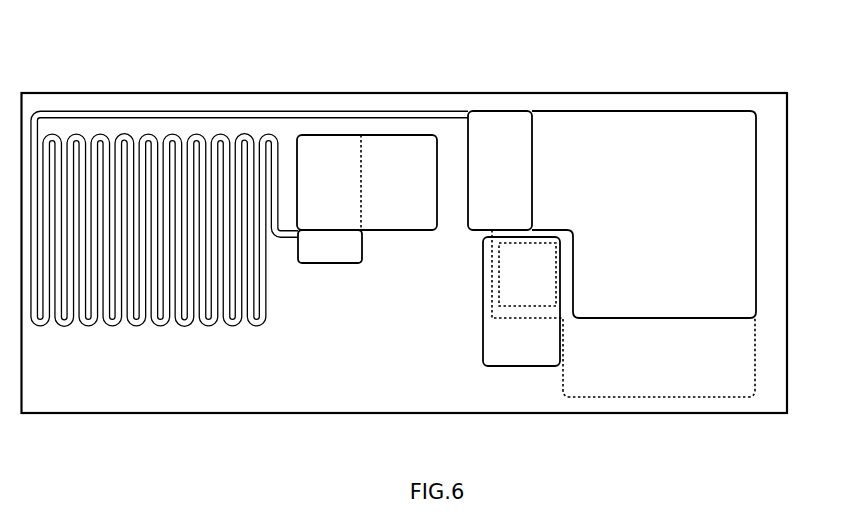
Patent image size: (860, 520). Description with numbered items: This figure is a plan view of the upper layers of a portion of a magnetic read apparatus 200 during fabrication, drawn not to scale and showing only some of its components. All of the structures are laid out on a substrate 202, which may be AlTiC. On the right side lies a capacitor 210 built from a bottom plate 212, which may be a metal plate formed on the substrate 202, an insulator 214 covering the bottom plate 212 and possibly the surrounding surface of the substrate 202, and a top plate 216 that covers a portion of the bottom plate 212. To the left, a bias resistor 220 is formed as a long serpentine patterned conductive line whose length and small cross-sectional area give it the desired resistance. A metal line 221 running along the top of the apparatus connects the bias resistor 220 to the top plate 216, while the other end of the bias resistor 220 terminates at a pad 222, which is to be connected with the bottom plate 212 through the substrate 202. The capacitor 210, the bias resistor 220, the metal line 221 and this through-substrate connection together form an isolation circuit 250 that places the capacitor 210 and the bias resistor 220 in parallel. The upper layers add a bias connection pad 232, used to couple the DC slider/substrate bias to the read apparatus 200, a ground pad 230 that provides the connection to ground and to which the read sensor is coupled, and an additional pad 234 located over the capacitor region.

The magnetic read apparatus 200 is at (457, 43).
The substrate 202 is at (405, 253).
The capacitor 210 is at (765, 350).
The bottom plate 212 is at (623, 313).
The insulator 214 is at (623, 313).
The top plate 216 is at (644, 214).
The bias resistor 220 is at (117, 337).
The metal line 221 is at (345, 108).
The pad 222 is at (330, 246).
The ground pad 230 is at (500, 170).
The bias connection pad 232 is at (367, 182).
The pad 234 is at (521, 301).
The isolation circuit 250 is at (421, 389).